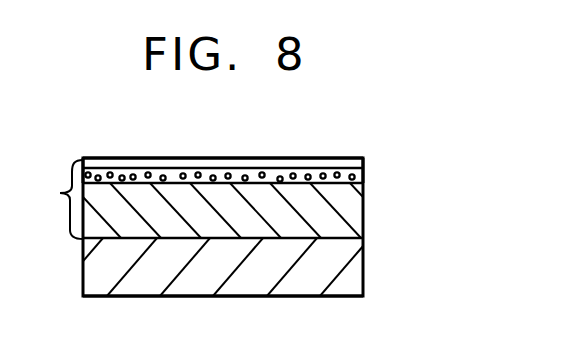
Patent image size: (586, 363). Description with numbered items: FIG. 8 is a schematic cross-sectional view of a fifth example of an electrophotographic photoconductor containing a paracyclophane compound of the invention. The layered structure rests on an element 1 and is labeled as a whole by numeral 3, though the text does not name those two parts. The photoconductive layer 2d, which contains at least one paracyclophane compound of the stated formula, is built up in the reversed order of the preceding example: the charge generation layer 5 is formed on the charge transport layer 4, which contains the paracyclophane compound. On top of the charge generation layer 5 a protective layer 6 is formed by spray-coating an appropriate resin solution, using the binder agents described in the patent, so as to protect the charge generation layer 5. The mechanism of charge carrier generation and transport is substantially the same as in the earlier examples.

The substrate 1 is at (355, 272).
The recording layer stack 3 is at (307, 168).
The charge transport layer 4 is at (355, 218).
The charge generation layer 5 is at (363, 177).
The protective layer 6 is at (363, 167).
The photoconductive layer 2d is at (53, 199).